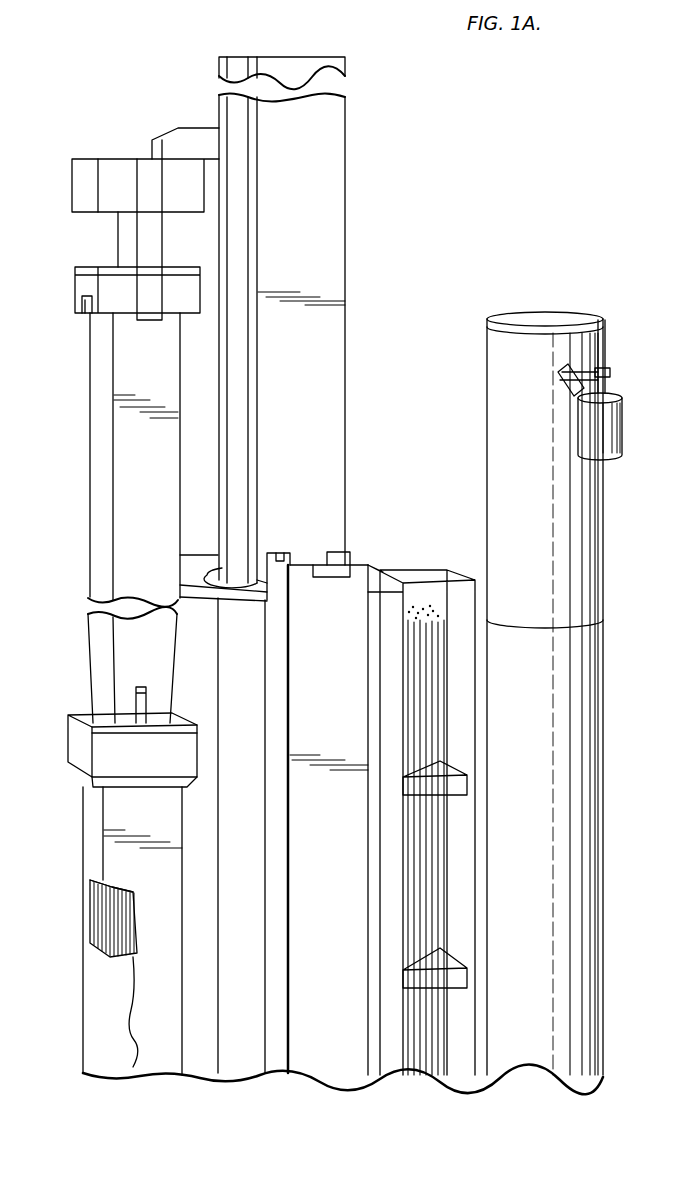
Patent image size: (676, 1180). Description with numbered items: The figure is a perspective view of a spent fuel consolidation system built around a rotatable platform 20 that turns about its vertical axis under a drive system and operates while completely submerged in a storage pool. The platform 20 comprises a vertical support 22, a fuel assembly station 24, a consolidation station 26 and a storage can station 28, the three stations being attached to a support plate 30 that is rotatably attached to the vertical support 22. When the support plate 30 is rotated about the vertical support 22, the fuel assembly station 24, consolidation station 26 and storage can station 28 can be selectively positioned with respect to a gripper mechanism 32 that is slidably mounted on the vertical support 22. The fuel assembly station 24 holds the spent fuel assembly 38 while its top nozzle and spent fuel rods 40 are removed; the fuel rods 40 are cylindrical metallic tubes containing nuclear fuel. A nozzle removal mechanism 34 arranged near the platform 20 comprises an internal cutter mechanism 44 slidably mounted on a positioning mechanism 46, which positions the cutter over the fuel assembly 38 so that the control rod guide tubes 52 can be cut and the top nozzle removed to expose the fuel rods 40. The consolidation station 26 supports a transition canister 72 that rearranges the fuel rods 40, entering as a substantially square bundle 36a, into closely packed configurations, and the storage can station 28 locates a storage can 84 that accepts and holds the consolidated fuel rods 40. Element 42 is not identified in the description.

The rotatable platform 20 is at (378, 278).
The vertical support 22 is at (322, 155).
The fuel assembly station 24 is at (467, 593).
The consolidation station 26 is at (332, 668).
The storage can station 28 is at (168, 961).
The support plate 30 is at (380, 577).
The gripper mechanism 32 is at (118, 173).
The nozzle removal mechanism 34 is at (487, 373).
The bundle 36a is at (90, 913).
The fuel assembly 38 is at (443, 845).
The fuel rods 40 is at (97, 948).
The plate 42 is at (277, 743).
The internal cutter mechanism 44 is at (623, 415).
The positioning mechanism 46 is at (600, 320).
The control rod guide tubes 52 is at (438, 672).
The transition canister 72 is at (127, 373).
The storage can 84 is at (163, 870).